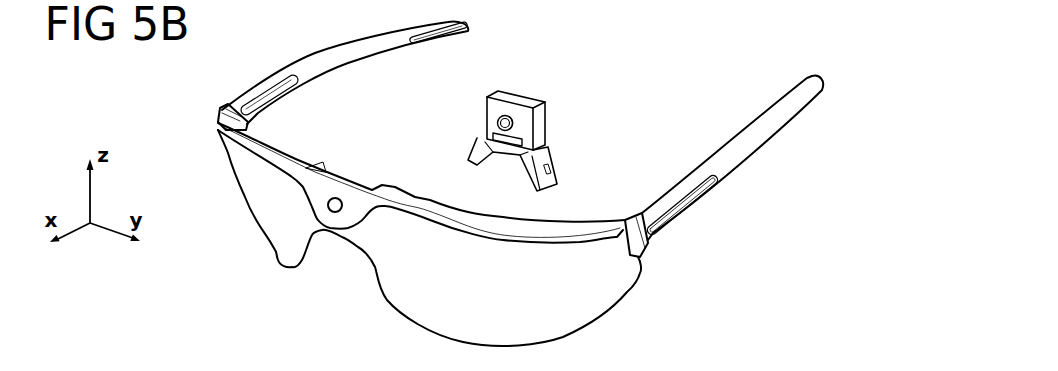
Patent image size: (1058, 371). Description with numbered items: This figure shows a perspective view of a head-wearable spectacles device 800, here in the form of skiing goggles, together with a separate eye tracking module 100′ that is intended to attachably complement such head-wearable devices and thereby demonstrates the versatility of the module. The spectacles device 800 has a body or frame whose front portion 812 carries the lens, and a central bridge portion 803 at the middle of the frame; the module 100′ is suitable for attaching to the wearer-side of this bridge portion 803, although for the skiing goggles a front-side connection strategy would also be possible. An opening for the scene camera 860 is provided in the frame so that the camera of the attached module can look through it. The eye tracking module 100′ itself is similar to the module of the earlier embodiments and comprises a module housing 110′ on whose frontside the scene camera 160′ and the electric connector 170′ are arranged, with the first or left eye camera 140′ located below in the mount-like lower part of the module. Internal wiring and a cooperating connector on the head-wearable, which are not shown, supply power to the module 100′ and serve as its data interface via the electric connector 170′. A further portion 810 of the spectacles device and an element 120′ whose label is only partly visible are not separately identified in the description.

The spectacles device 800 is at (522, 183).
The bridge portion 803 is at (347, 170).
The temple 810 is at (665, 242).
The front portion of body/frame 812 is at (497, 243).
The opening for scene camera 860 is at (328, 205).
The eye tracking module 100′ is at (520, 116).
The module housing 110′ is at (523, 95).
The scene camera 160′ is at (488, 120).
The electric connector 170′ is at (523, 140).
The first/left eye camera 140′ is at (551, 170).
The component (clipped) 120′ is at (650, 366).